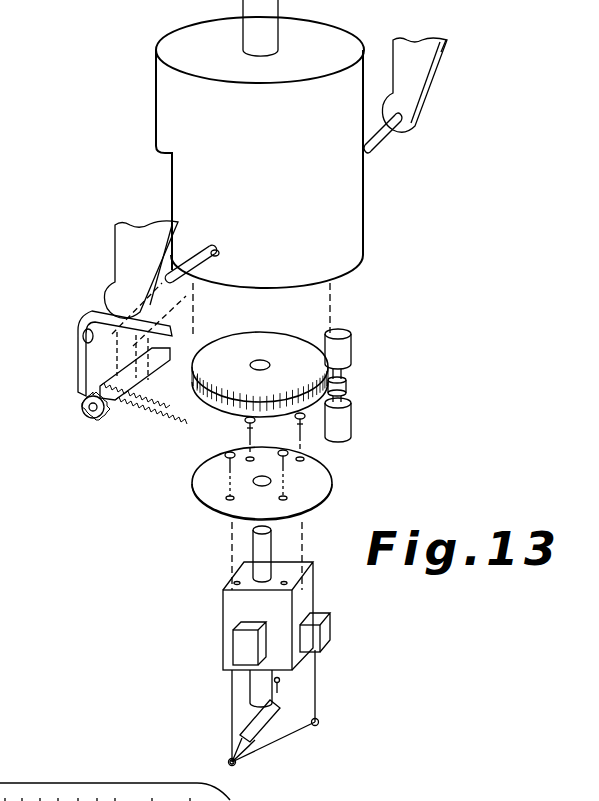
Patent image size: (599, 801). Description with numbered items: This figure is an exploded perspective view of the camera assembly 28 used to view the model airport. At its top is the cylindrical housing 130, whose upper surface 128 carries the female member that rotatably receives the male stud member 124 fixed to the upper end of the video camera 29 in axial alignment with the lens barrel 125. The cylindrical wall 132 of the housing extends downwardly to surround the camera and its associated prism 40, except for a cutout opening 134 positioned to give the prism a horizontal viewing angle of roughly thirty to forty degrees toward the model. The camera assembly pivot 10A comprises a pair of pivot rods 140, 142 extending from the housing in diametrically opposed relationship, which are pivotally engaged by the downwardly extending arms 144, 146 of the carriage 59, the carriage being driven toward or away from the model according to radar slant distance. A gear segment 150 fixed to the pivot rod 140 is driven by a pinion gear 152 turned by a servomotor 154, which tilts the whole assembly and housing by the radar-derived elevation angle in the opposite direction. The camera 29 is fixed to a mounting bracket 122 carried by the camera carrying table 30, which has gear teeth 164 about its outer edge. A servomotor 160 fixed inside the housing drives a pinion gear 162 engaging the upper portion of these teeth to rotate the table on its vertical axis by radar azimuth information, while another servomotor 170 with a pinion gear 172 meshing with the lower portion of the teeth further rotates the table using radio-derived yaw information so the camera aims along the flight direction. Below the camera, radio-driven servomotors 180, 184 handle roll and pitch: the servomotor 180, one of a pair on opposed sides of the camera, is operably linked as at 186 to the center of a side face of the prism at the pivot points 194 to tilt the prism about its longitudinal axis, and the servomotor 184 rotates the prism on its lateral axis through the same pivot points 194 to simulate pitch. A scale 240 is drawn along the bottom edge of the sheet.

The upper surface 128 is at (322, 53).
The cylindrical housing 130 is at (282, 175).
The cylindrical wall 132 is at (362, 202).
The cutout opening 134 is at (172, 183).
The downwardly extending arm 146 is at (432, 99).
The carriage 59 is at (446, 50).
The pivot rod 142 is at (378, 143).
The downwardly extending arm 144 is at (115, 253).
The pivot rod 140 is at (199, 252).
The camera assembly pivot 10A is at (218, 254).
The gear segment 150 is at (78, 373).
The pinion gear 152 is at (90, 420).
The servomotor 154 is at (133, 396).
The camera carrying table 30 is at (291, 347).
The gear teeth 164 is at (289, 396).
The servomotor 160 is at (351, 346).
The pinion gear 162 is at (343, 373).
The pinion gear 172 is at (347, 389).
The servomotor 170 is at (352, 419).
The mounting bracket 122 is at (328, 490).
The male stud member 124 is at (268, 546).
The camera assembly 28 is at (162, 583).
The video camera 29 is at (305, 597).
The servomotor 180 is at (233, 640).
The servomotor 184 is at (330, 626).
The lens barrel 125 is at (281, 689).
The link 186 is at (232, 703).
The prism 40 is at (257, 740).
The pivot points 194 is at (240, 768).
The scale 240 is at (131, 784).